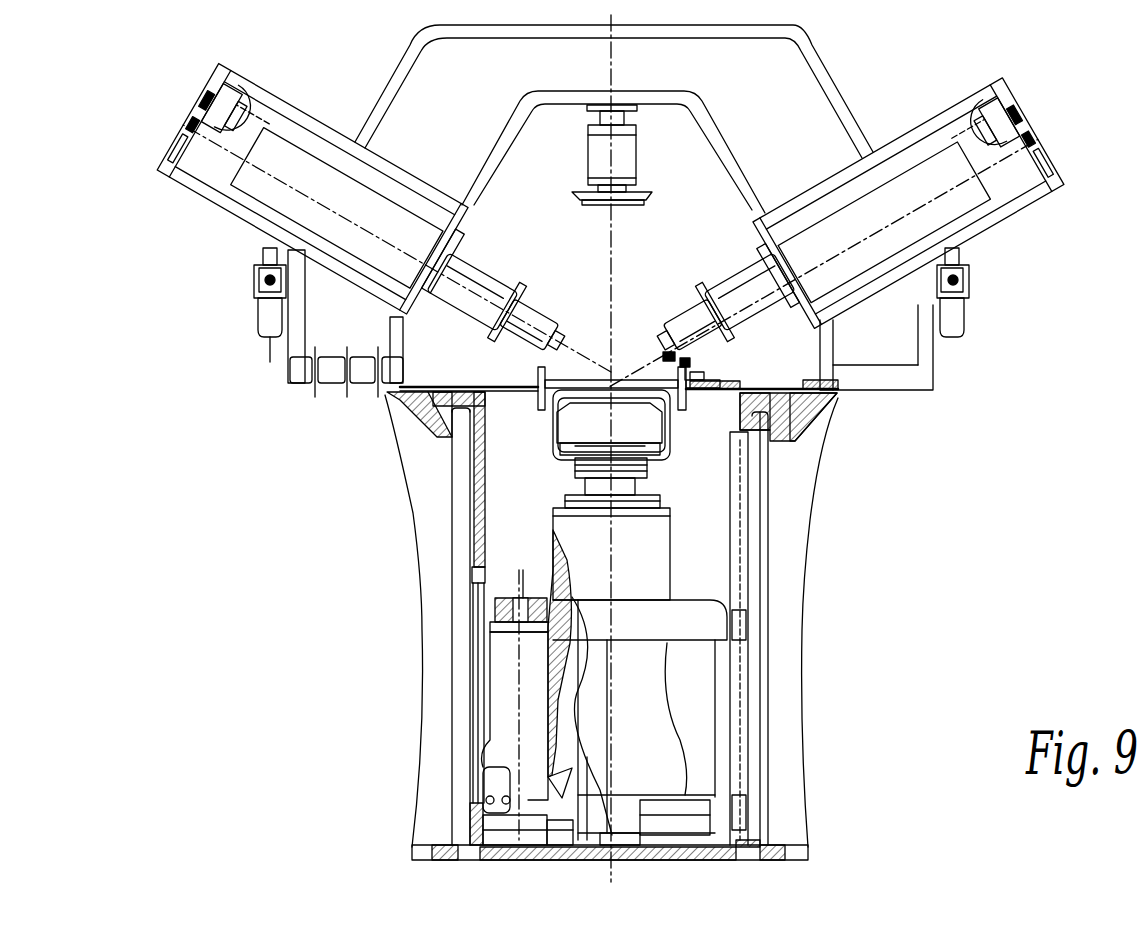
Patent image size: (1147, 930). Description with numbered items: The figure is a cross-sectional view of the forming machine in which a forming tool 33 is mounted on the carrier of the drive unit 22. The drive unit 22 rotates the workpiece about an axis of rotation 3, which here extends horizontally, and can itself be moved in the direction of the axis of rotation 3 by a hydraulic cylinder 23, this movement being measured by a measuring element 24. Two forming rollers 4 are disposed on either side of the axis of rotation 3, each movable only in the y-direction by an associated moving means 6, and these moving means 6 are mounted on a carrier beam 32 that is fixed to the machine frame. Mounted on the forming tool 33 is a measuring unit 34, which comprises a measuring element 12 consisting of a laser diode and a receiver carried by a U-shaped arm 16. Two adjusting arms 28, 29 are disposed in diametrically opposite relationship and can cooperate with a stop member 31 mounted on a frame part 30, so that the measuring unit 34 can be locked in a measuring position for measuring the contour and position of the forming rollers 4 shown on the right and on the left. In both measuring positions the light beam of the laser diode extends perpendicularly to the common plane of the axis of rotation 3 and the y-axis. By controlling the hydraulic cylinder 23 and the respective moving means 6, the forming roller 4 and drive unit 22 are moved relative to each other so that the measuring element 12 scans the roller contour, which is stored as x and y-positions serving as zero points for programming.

The axis of rotation 3 is at (613, 700).
The forming roller 4 is at (457, 290).
The moving means 6 is at (200, 150).
The measuring element 12 is at (668, 352).
The U-shaped arm 16 is at (700, 362).
The drive unit 22 is at (660, 565).
The hydraulic cylinder 23 is at (505, 688).
The measuring element 24 is at (485, 640).
The adjusting arm 28 is at (683, 413).
The adjusting arm 29 is at (535, 402).
The frame part 30 is at (772, 398).
The stop member 31 is at (800, 402).
The carrier beam 32 is at (820, 118).
The forming tool 33 is at (573, 435).
The measuring unit 34 is at (580, 376).